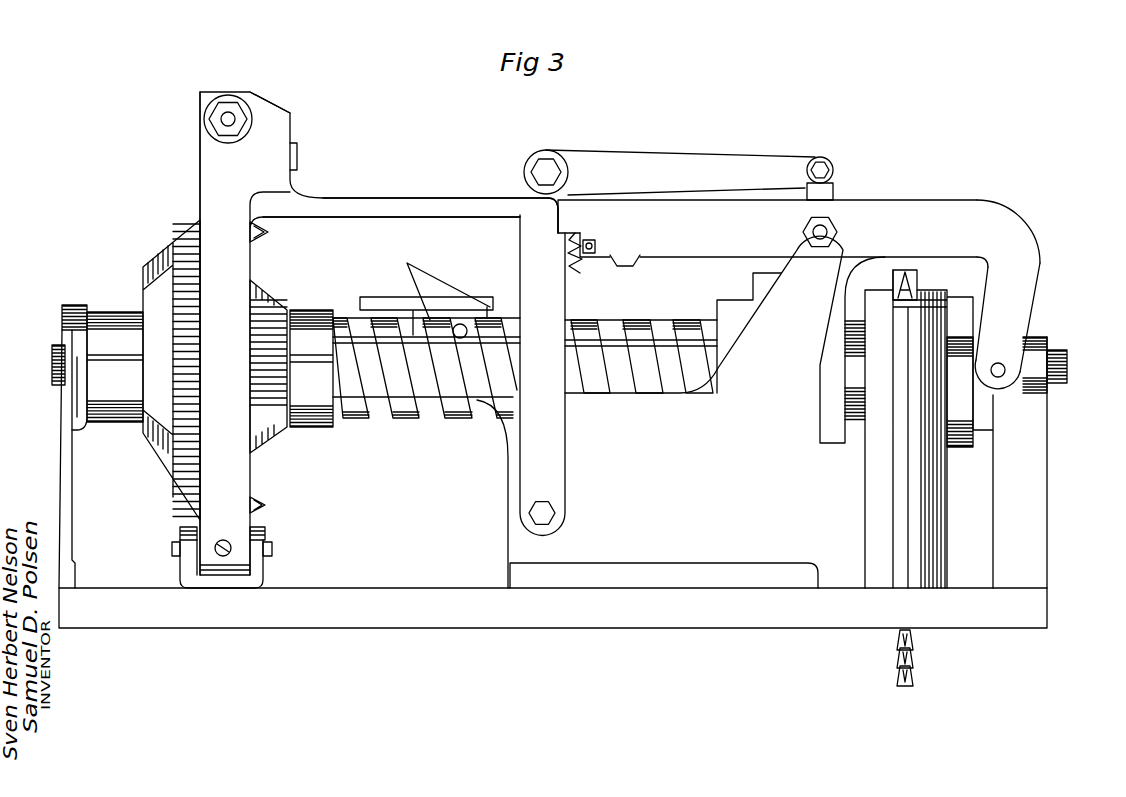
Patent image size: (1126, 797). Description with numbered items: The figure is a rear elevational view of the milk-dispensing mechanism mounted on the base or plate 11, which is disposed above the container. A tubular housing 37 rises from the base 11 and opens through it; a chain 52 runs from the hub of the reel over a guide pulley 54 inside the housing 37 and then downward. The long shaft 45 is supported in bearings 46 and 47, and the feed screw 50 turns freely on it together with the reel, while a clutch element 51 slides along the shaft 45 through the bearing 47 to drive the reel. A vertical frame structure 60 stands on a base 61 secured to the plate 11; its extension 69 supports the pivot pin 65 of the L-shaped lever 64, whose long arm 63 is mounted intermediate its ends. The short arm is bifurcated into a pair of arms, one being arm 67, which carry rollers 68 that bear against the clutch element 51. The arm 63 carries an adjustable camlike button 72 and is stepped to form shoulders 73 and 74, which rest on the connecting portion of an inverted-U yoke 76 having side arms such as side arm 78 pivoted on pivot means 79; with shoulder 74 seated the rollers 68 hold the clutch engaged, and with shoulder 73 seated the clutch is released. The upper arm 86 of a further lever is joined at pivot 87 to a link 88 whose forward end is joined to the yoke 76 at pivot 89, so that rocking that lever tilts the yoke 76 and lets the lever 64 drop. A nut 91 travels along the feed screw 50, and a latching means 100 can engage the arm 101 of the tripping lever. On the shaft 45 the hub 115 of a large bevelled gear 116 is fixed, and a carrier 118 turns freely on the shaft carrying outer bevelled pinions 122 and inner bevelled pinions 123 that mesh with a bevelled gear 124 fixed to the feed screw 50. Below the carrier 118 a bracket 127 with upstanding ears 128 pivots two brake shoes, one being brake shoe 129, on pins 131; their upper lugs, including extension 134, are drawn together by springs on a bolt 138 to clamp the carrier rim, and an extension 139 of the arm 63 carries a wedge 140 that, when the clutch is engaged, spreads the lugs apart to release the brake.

The base or plate 11 is at (470, 617).
The tubular housing 37 is at (883, 557).
The shaft 45 is at (50, 366).
The bearing 46 is at (78, 350).
The bearing 47 is at (1032, 360).
The worm or feed screw 50 is at (692, 321).
The clutch element 51 is at (993, 436).
The chain 52 is at (895, 673).
The guide pulley or roller 54 is at (915, 282).
The vertical frame structure 60 is at (613, 551).
The base 61 is at (633, 578).
The long arm 63 is at (730, 220).
The L-shaped lever 64 is at (1041, 215).
The pivot means 65 is at (838, 231).
The arm 67 is at (1012, 308).
The rollers 68 is at (1014, 390).
The extension 69 is at (805, 297).
The camlike button 72 is at (626, 260).
The shoulder 73 is at (555, 219).
The shoulder 74 is at (563, 232).
The yoke 76 is at (510, 261).
The side arm 78 is at (545, 444).
The pivot means 79 is at (546, 512).
The upper arm 86 is at (833, 192).
The pivot 87 is at (830, 166).
The link 88 is at (684, 170).
The pivot 89 is at (549, 168).
The nut 91 is at (733, 323).
The latching means 100 is at (366, 303).
The arm 101 is at (424, 287).
The hub 115 is at (100, 320).
The bevelled gear 116 is at (147, 270).
The carrier or pulley-like device 118 is at (191, 182).
The outer bevelled pinion 122 is at (262, 228).
The inner bevelled pinion 123 is at (258, 282).
The bevelled gear 124 is at (270, 305).
The bracket 127 is at (172, 574).
The ears 128 is at (182, 531).
The brake shoe 129 is at (223, 287).
The pins 131 is at (270, 550).
The extension 134 is at (265, 125).
The bolt 138 is at (232, 116).
The extension 139 is at (395, 207).
The wedge-shaped piece 140 is at (297, 156).